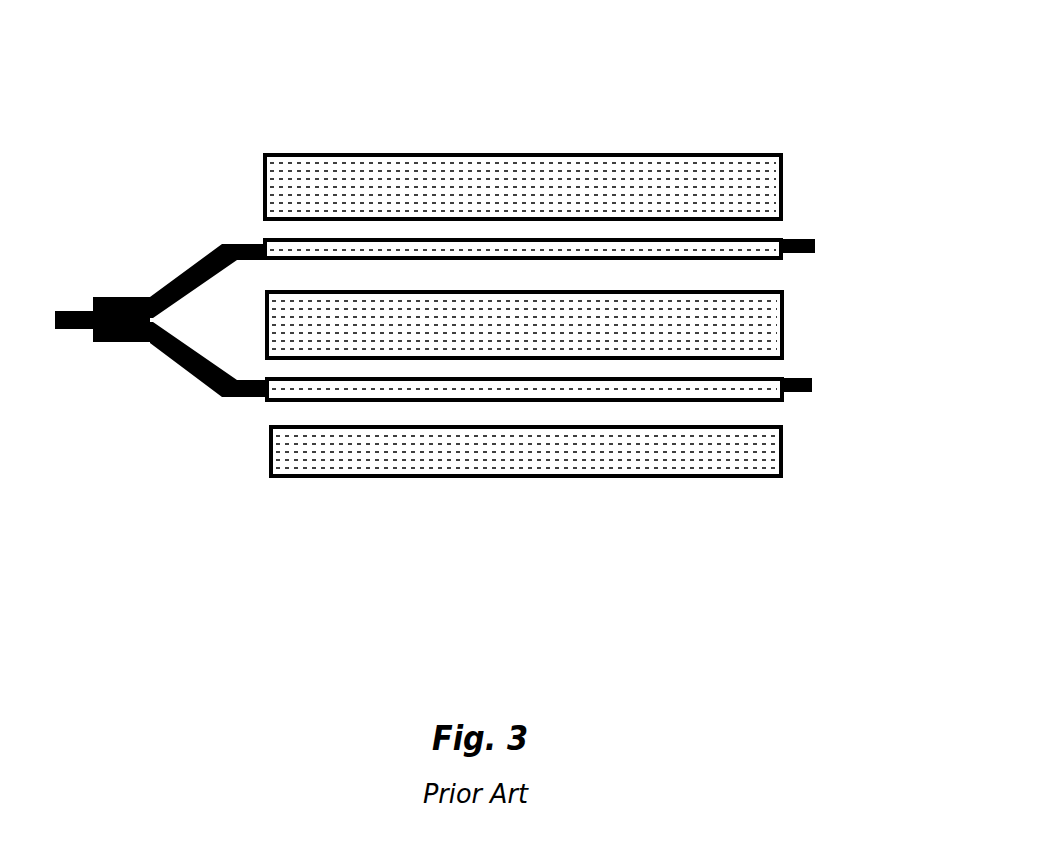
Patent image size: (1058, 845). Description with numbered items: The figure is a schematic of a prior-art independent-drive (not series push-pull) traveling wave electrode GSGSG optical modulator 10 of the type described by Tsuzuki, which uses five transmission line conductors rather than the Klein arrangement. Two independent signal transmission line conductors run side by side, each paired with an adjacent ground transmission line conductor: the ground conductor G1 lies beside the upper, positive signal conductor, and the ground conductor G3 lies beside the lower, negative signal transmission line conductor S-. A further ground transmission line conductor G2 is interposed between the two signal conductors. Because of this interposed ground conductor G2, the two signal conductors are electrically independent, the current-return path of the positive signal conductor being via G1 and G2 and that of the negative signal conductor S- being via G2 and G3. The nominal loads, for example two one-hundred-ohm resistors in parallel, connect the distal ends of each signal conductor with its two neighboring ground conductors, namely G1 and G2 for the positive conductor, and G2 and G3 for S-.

The prior art actuator stack 10 is at (467, 122).
The ground transmission line conductor G1 is at (642, 172).
The interposed ground transmission line conductor G2 is at (758, 330).
The ground transmission line conductor G3 is at (705, 443).
The signal transmission line conductor S- is at (762, 387).